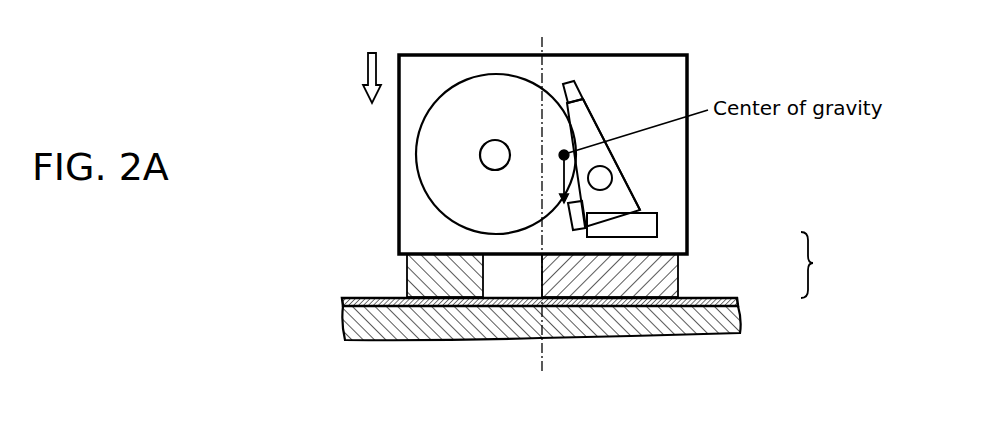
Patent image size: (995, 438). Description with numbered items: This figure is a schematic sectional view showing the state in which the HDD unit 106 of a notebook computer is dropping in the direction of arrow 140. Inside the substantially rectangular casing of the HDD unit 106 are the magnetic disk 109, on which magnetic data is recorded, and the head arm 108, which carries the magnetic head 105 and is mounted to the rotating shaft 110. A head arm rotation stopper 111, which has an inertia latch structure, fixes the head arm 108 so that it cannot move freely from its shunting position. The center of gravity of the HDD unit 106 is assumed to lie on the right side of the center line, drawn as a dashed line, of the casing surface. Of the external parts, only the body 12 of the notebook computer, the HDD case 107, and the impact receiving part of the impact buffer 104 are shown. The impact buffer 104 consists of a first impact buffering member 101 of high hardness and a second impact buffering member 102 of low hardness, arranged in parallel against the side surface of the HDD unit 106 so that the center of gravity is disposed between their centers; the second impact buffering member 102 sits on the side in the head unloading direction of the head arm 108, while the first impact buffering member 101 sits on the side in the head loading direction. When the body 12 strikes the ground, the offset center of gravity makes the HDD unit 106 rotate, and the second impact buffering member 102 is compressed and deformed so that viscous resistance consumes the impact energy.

The body 12 is at (670, 323).
The first impact buffering member 101 is at (465, 283).
The second impact buffering member 102 is at (680, 263).
The impact buffer 104 is at (834, 265).
The magnetic head 105 is at (572, 93).
The HDD unit 106 is at (400, 225).
The HDD case 107 is at (670, 305).
The head arm 108 is at (593, 120).
The magnetic disk 109 is at (512, 107).
The rotating shaft 110 is at (600, 178).
The head arm rotation stopper 111 is at (640, 210).
The arrow 140 is at (366, 83).